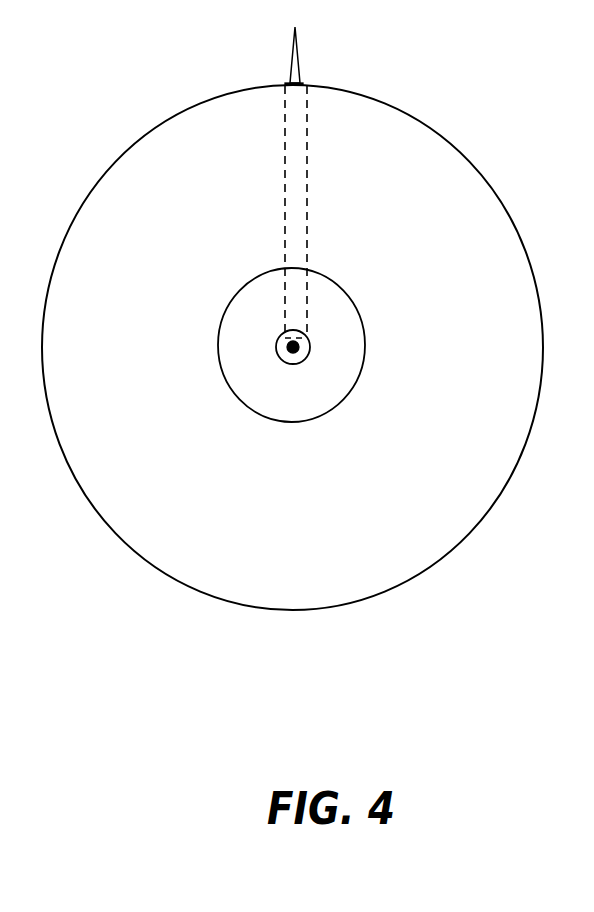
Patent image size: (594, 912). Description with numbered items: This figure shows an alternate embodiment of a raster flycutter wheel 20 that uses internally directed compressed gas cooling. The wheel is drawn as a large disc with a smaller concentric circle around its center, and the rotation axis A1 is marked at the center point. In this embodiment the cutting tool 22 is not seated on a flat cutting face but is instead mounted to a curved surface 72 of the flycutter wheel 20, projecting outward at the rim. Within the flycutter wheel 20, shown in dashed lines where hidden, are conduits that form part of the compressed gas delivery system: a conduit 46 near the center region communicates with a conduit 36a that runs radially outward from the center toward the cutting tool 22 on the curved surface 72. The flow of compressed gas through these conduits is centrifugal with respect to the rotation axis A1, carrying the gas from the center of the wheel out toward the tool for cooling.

The flycutter wheel 20 is at (155, 407).
The cutting tool 22 is at (292, 63).
The conduit 36a is at (309, 200).
The conduit 46 is at (298, 349).
The curved surface 72 is at (452, 142).
The rotation axis A1 is at (298, 352).